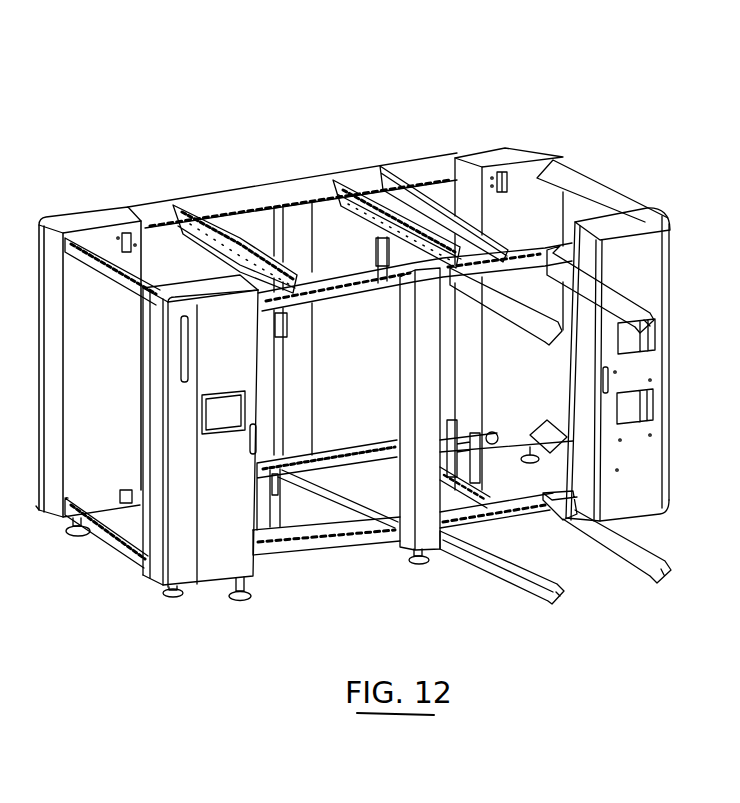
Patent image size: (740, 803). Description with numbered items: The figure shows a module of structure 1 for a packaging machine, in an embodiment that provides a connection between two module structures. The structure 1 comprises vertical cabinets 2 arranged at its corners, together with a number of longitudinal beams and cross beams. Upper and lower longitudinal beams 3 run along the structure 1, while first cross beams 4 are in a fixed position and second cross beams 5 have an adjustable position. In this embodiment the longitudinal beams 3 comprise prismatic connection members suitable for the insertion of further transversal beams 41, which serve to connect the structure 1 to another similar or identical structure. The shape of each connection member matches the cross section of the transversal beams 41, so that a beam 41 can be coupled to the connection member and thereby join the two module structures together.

The structure 1 is at (645, 181).
The vertical cabinets 2 is at (650, 368).
The longitudinal beams 3 is at (268, 183).
The first cross beams 4 is at (570, 180).
The second cross beams 5 is at (203, 228).
The transversal beams 41 is at (513, 567).